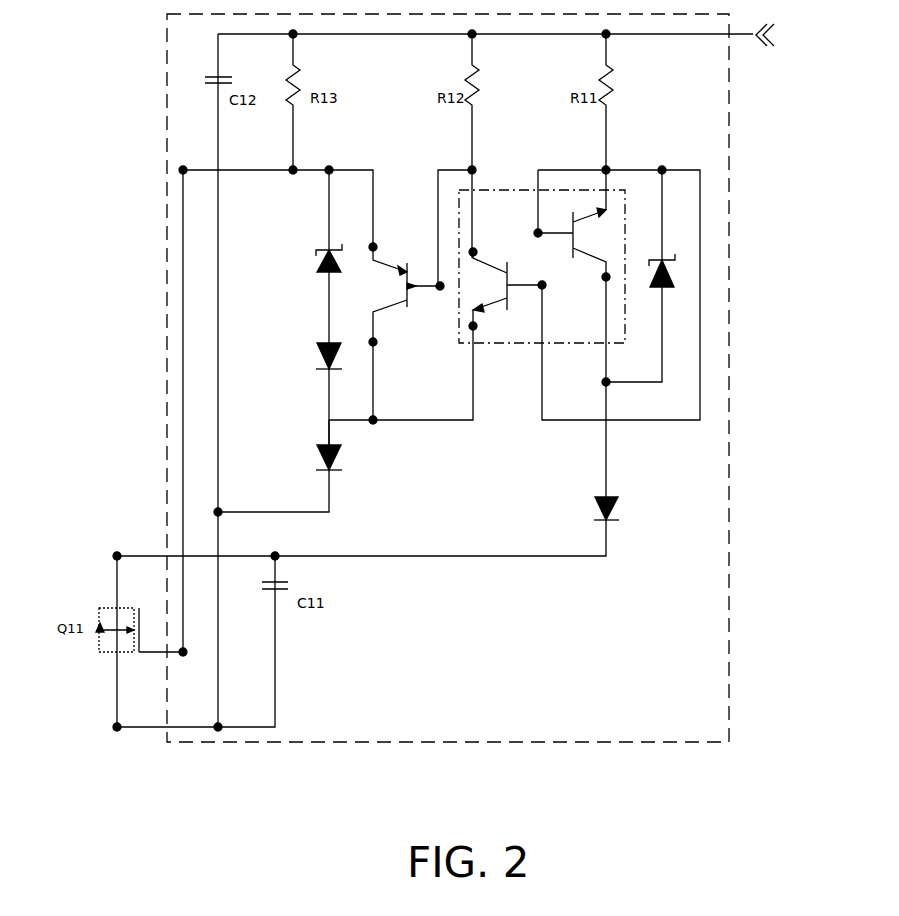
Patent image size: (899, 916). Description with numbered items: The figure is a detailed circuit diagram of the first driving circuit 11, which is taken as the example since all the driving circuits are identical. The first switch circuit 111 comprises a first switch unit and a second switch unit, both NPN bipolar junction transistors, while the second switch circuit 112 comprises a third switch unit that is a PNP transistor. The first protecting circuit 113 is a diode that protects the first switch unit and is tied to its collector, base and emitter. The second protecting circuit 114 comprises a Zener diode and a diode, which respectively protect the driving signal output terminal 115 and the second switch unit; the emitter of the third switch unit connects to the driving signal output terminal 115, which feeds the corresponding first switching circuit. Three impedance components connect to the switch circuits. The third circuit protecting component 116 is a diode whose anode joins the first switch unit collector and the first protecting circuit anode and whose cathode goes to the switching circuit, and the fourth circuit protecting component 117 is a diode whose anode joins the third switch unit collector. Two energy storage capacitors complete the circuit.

The first driving circuit 11 is at (729, 300).
The first switch circuit 111 is at (500, 346).
The second switch circuit 112 is at (408, 228).
The first protecting circuit 113 is at (678, 255).
The second protecting circuit 114 is at (283, 320).
The driving signal output terminal 115 is at (180, 166).
The third circuit protecting component 116 is at (629, 512).
The fourth circuit protecting component 117 is at (353, 469).